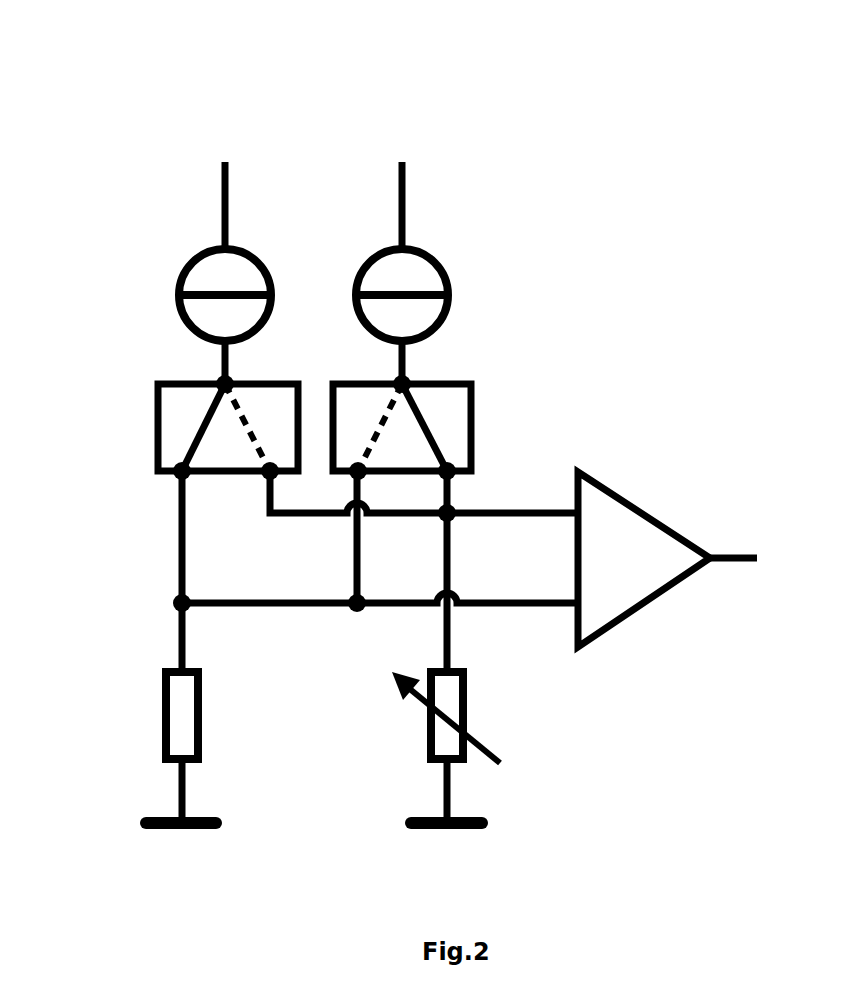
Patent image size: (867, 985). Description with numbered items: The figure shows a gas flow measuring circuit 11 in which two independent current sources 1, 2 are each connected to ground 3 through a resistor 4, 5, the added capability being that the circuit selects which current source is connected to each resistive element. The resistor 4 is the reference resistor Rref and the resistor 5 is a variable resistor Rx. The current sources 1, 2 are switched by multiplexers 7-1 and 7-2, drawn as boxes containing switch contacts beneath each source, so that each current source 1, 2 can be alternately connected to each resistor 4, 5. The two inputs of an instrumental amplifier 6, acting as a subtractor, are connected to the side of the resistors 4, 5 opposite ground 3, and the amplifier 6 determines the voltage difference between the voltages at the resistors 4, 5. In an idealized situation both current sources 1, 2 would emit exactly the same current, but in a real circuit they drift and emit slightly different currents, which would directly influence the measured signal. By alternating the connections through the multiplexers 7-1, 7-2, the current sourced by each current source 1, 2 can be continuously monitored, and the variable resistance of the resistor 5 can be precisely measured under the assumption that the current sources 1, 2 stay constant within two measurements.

The gas flow measuring circuit 11 is at (172, 122).
The current source 1 is at (180, 292).
The current source 2 is at (455, 292).
The multiplexer 7-1 is at (177, 432).
The multiplexer 7-2 is at (455, 410).
The instrumental amplifier 6 is at (675, 537).
The resistor 4 is at (162, 737).
The resistor 5 is at (465, 697).
The ground 3 is at (405, 826).